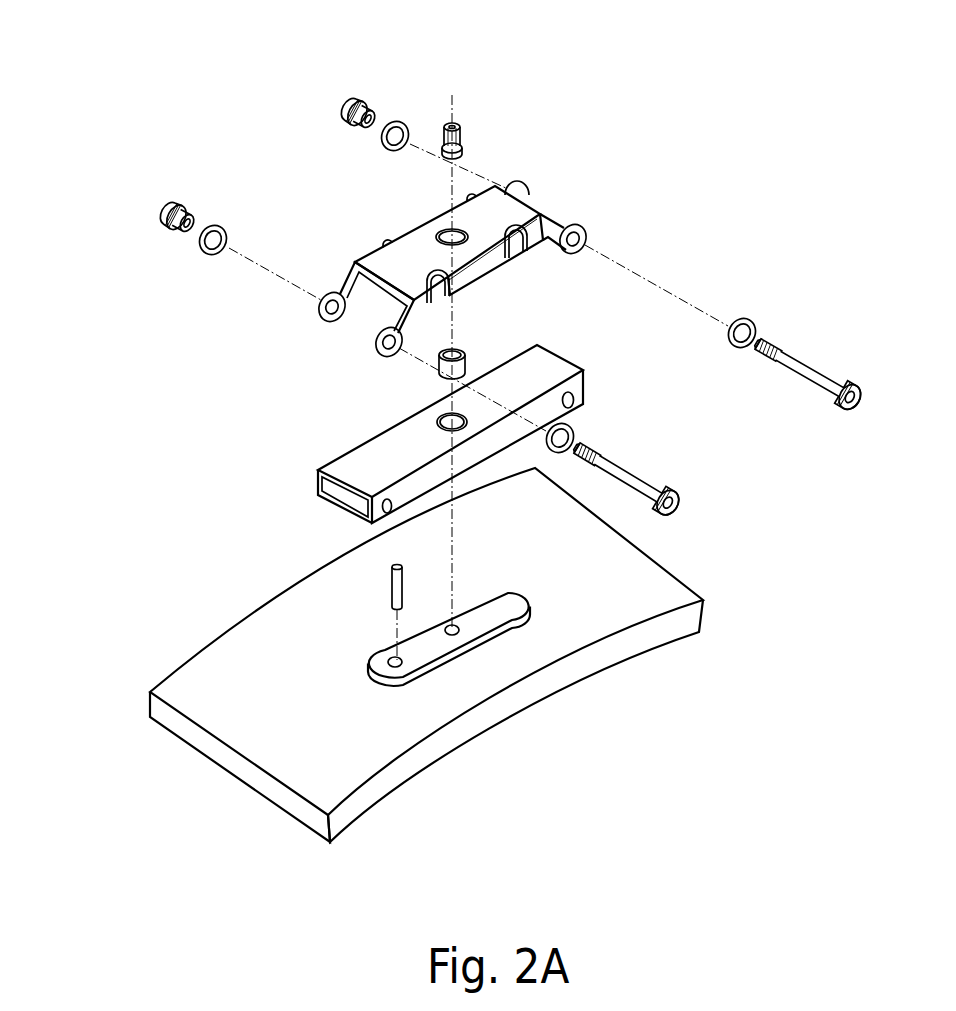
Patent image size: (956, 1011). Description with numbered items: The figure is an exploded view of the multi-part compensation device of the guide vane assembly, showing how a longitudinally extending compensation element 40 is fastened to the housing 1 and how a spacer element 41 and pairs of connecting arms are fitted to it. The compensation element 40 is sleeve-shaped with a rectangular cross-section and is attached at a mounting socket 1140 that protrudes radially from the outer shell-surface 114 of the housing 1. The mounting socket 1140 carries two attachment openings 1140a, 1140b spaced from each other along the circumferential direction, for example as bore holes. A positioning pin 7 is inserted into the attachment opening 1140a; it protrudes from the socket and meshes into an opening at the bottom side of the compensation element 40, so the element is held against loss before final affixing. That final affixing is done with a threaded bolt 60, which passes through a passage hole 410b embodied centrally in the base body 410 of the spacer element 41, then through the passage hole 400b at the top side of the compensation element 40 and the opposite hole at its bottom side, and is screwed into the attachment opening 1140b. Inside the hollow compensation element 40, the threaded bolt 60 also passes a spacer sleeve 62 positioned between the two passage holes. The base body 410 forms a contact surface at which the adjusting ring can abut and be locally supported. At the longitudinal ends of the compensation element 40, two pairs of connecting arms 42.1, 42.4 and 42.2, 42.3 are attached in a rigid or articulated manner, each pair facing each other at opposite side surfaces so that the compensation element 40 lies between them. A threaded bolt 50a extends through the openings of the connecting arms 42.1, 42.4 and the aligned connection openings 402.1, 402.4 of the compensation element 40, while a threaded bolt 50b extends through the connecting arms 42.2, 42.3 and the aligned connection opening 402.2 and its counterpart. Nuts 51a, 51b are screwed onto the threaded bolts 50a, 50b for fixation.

The housing 1 is at (474, 685).
The outer shell-surface 114 is at (308, 767).
The mounting socket 1140 is at (354, 708).
The attachment opening 1140a is at (380, 657).
The attachment opening 1140b is at (457, 637).
The positioning pin 7 is at (383, 578).
The compensation element 40 is at (448, 435).
The passage hole 400b is at (440, 420).
The connection opening 402.1 is at (367, 508).
The connection opening 402.2 is at (587, 396).
The connection opening 402.4 is at (320, 490).
The spacer sleeve 62 is at (465, 350).
The spacer element 41 is at (424, 220).
The base body 410 is at (519, 250).
The passage hole 410b is at (440, 236).
The connecting arm 42.1 is at (376, 342).
The connecting arm 42.2 is at (583, 227).
The connecting arm 42.3 is at (523, 183).
The connecting arm 42.4 is at (320, 302).
The threaded bolt 60 is at (470, 118).
The nut 51a is at (167, 210).
The nut 51b is at (357, 102).
The threaded bolt 50a is at (655, 482).
The threaded bolt 50b is at (817, 367).